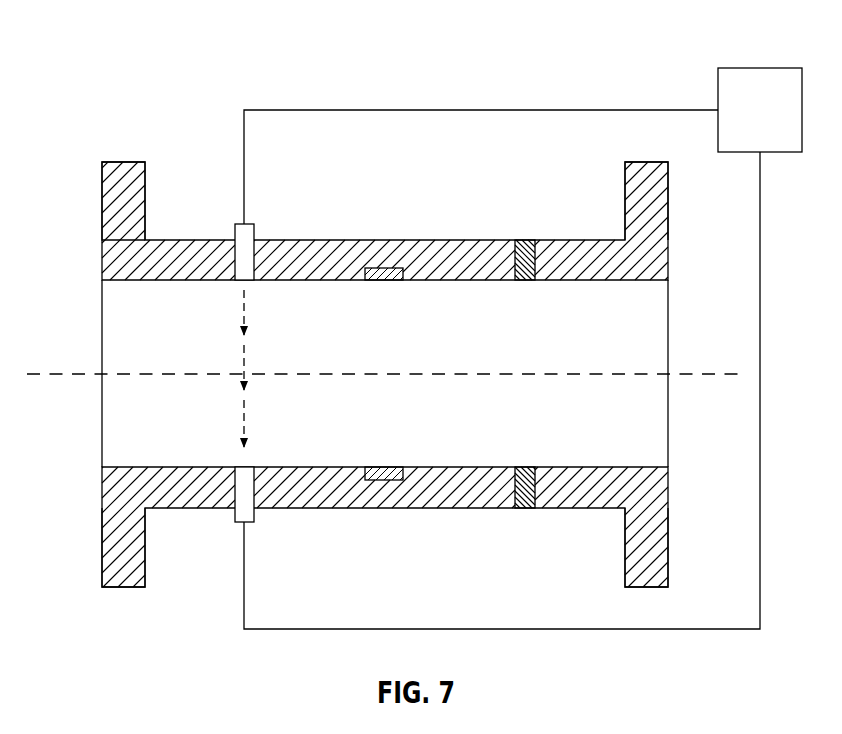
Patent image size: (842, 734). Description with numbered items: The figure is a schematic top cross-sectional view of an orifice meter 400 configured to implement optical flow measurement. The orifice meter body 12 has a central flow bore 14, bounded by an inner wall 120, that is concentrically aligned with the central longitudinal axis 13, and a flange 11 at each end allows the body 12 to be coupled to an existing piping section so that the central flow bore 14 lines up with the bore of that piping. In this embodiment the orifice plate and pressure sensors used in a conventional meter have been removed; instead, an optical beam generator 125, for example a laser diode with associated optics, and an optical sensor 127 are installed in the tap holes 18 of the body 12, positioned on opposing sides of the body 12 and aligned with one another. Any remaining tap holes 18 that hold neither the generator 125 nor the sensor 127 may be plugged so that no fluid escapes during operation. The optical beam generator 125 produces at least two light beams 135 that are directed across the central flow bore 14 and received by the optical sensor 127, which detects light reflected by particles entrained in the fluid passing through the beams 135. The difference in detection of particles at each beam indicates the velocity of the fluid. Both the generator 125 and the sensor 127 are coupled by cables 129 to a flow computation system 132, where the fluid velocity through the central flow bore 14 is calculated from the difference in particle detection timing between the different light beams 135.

The orifice meter 400 is at (115, 60).
The flange 11 is at (101, 200).
The orifice meter body 12 is at (150, 240).
The central longitudinal axis 13 is at (52, 374).
The central flow bore 14 is at (118, 432).
The tap holes 18 is at (232, 252).
The inner wall 120 is at (596, 467).
The optical beam generator 125 is at (256, 232).
The optical sensor 127 is at (256, 512).
The cables 129 is at (244, 140).
The flow computation system 132 is at (781, 126).
The light beams 135 is at (246, 355).